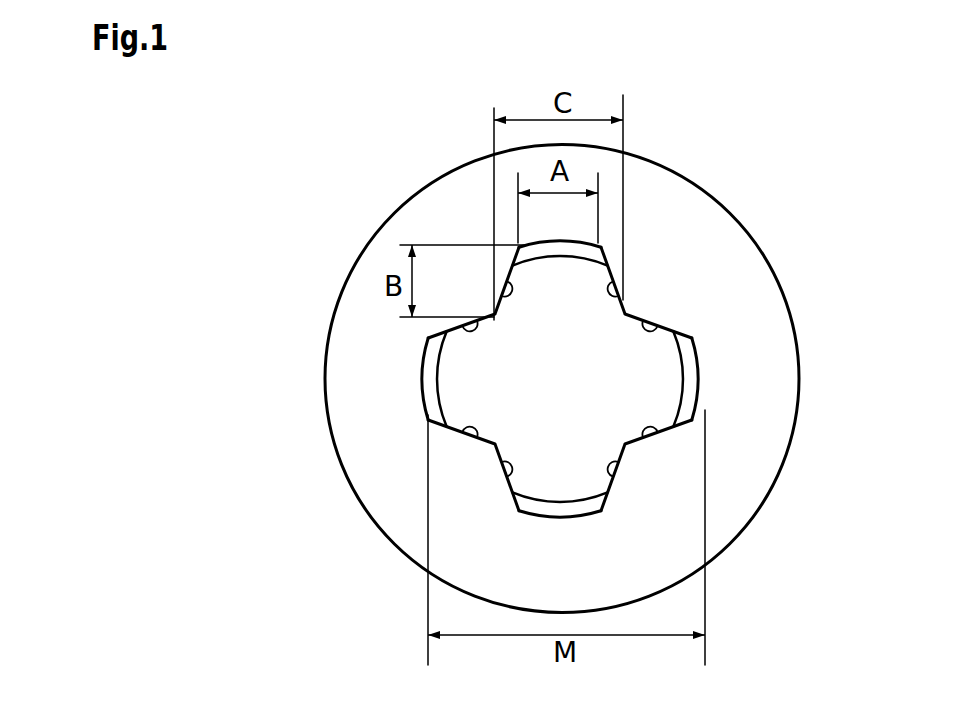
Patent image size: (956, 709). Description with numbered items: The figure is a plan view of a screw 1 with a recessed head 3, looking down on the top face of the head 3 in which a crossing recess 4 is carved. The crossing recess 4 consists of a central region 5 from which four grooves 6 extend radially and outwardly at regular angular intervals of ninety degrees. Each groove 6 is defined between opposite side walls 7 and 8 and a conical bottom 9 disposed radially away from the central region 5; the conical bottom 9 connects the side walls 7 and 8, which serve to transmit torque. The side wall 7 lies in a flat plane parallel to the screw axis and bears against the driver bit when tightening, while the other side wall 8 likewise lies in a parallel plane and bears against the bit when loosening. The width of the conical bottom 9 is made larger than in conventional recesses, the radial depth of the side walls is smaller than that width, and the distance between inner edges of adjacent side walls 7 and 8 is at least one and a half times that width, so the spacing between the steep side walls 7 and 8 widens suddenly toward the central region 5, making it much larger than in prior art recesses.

The screw 1 is at (325, 288).
The head 3 is at (757, 271).
The crossing recess 4 is at (620, 336).
The central region 5 is at (520, 400).
The groove 6 is at (562, 268).
The side wall 7 is at (608, 273).
The side wall 8 is at (507, 290).
The conical bottom 9 is at (542, 247).